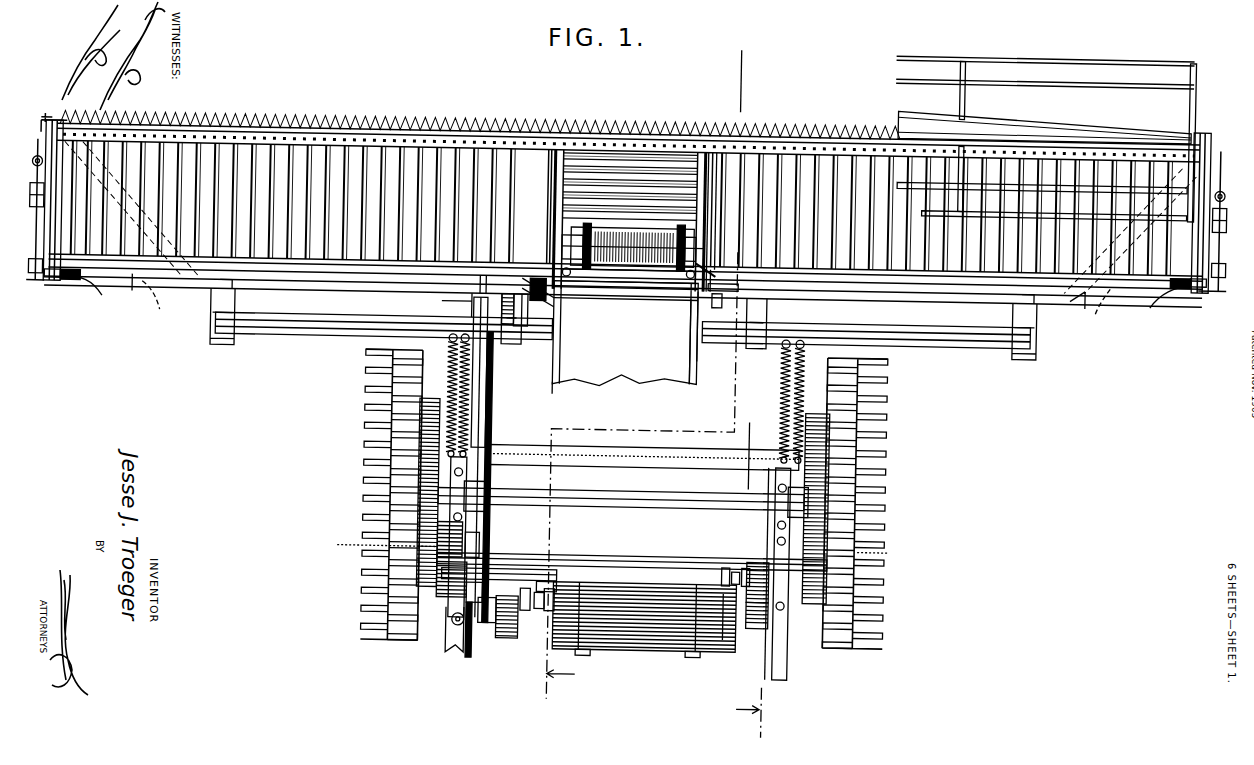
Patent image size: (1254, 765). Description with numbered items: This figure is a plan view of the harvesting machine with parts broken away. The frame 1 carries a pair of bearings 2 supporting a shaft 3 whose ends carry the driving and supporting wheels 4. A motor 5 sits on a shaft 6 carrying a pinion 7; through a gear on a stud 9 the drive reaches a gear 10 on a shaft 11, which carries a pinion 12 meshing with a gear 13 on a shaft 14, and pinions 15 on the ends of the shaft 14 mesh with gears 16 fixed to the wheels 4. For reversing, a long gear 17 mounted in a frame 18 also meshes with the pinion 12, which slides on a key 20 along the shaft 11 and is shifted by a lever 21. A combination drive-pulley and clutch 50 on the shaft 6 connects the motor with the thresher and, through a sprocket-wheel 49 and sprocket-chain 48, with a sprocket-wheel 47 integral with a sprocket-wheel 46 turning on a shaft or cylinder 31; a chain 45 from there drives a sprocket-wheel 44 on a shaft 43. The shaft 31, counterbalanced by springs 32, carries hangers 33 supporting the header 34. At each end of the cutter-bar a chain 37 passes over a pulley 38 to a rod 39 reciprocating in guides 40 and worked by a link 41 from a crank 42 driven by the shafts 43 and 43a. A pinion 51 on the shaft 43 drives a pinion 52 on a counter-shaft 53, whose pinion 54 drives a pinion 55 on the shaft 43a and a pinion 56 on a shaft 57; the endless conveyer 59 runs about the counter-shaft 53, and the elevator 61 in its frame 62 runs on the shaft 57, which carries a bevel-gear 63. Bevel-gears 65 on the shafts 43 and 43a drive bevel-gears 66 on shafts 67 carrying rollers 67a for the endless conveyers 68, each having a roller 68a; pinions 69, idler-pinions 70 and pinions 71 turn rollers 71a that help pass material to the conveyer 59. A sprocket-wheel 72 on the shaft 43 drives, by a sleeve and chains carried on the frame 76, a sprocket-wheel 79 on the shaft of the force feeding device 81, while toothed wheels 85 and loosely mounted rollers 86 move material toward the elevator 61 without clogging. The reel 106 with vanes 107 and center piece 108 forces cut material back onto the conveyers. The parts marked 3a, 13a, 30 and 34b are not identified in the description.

The frame 1 is at (452, 650).
The bearings 2 is at (760, 518).
The shaft 3 is at (622, 512).
The plate 3a is at (700, 507).
The driving and supporting wheels 4 is at (470, 288).
The motor 5 is at (645, 654).
The shaft 6 is at (752, 620).
The pinion 7 is at (760, 625).
The stud 9 is at (753, 581).
The gear 10 is at (752, 568).
The shaft 11 is at (690, 578).
The pinion 12 is at (448, 580).
The gear 13 is at (466, 535).
The pinion 13a is at (482, 545).
The shaft 14 is at (605, 556).
The pinions 15 is at (615, 559).
The gears 16 is at (432, 400).
The long gear 17 is at (472, 660).
The frame 18 is at (488, 628).
The key 20 is at (499, 570).
The lever 21 is at (470, 598).
The pivot 30 is at (456, 626).
The shaft or cylinder 31 is at (280, 341).
The springs 32 is at (800, 368).
The hangers 33 is at (235, 306).
The header 34 is at (1125, 298).
The gate post 34b is at (573, 192).
The chain or flexible connection 37 is at (56, 131).
The pulley 38 is at (40, 125).
The rod 39 is at (31, 170).
The guides 40 is at (28, 218).
The link 41 is at (32, 292).
The eccentric or crank 42 is at (38, 285).
The shaft 43 is at (130, 300).
The shaft 43a is at (1078, 296).
The sprocket-wheel 44 is at (470, 292).
The chain 45 is at (510, 325).
The sprocket-wheel 46 is at (486, 370).
The sprocket-wheel 47 is at (486, 392).
The sprocket-chain 48 is at (492, 422).
The sprocket-wheel 49 is at (512, 642).
The combination drive-pulley and clutch 50 is at (535, 612).
The pinion 51 is at (527, 310).
The pinion 52 is at (478, 280).
The counter-shaft 53 is at (532, 282).
The pinion 54 is at (723, 293).
The pinion 55 is at (725, 311).
The pinion 56 is at (699, 340).
The shaft 57 is at (687, 310).
The endless conveyer 59 is at (660, 155).
The positive conveyer (elevator) 61 is at (625, 334).
The frame 62 is at (552, 393).
The bevel-gear 63 is at (545, 300).
The bevel-gears 65 is at (60, 286).
The bevel-gears 66 is at (70, 290).
The shafts 67 is at (651, 290).
The rollers 67a is at (646, 317).
The endless conveyers 68 is at (355, 170).
The roller 68a is at (750, 175).
The pinions 69 is at (714, 285).
The idler-pinions 70 is at (710, 278).
The pinions 71 is at (708, 270).
The rollers 71a is at (555, 160).
The sprocket-wheel 72 is at (540, 305).
The frame 76 is at (633, 247).
The sprocket-wheel 79 is at (583, 230).
The force feeding device 81 is at (680, 228).
The toothed wheel 85 is at (706, 268).
The rollers 86 is at (678, 282).
The reel 106 is at (1190, 58).
The vanes 107 is at (1145, 51).
The center piece 108 is at (1038, 114).